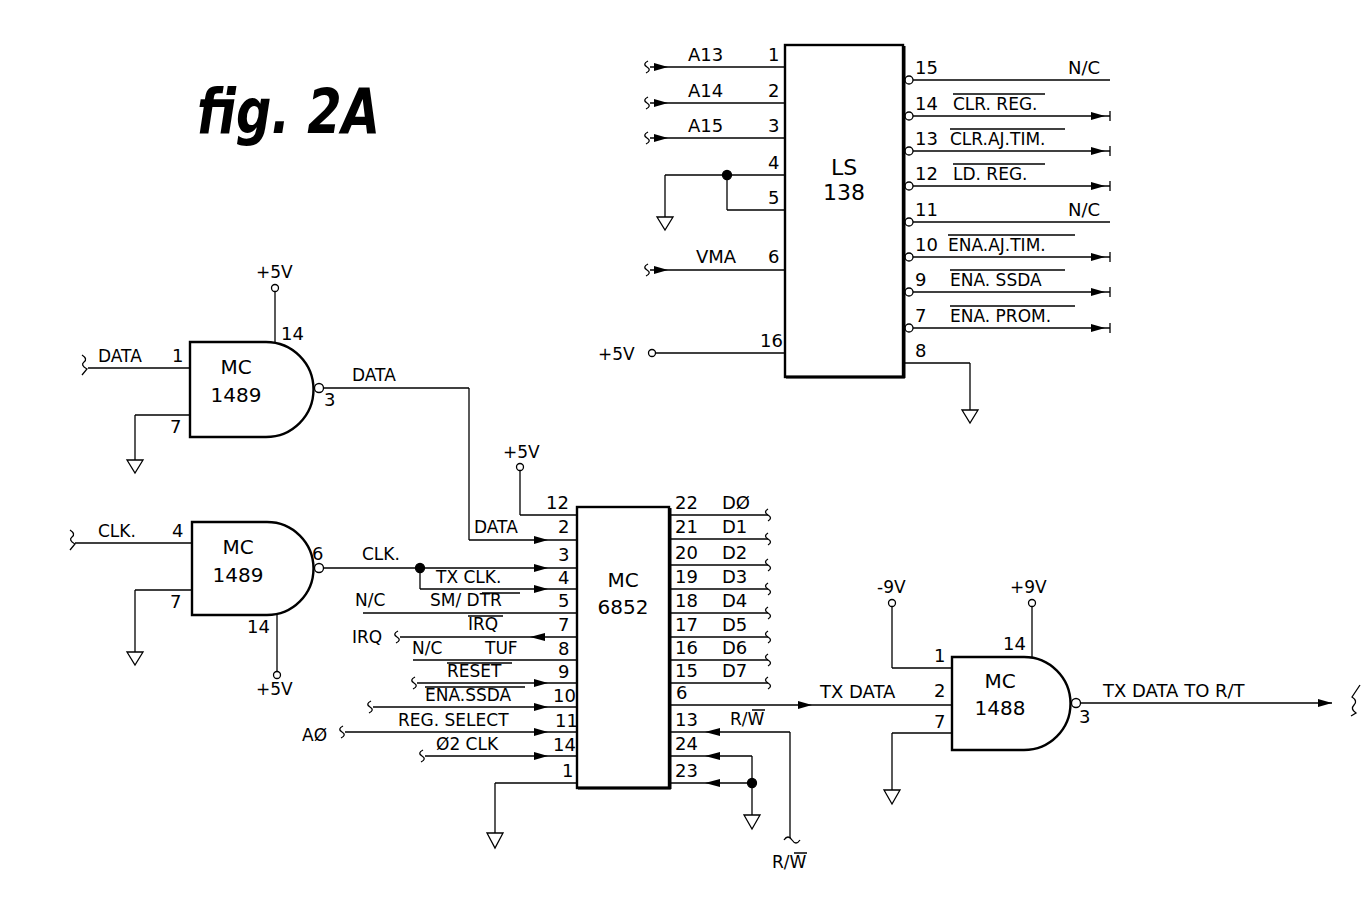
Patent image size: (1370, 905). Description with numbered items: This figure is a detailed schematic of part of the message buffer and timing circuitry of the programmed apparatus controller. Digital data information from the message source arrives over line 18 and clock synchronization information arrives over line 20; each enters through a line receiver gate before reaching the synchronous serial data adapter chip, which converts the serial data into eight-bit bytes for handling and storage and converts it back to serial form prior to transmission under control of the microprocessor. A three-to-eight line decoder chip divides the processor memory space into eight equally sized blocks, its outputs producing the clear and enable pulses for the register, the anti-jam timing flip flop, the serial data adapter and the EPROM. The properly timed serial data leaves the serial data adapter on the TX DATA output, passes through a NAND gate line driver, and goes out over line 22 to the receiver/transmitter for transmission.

The data line 18 is at (121, 358).
The clock line 20 is at (116, 533).
The data line 22 is at (1220, 716).